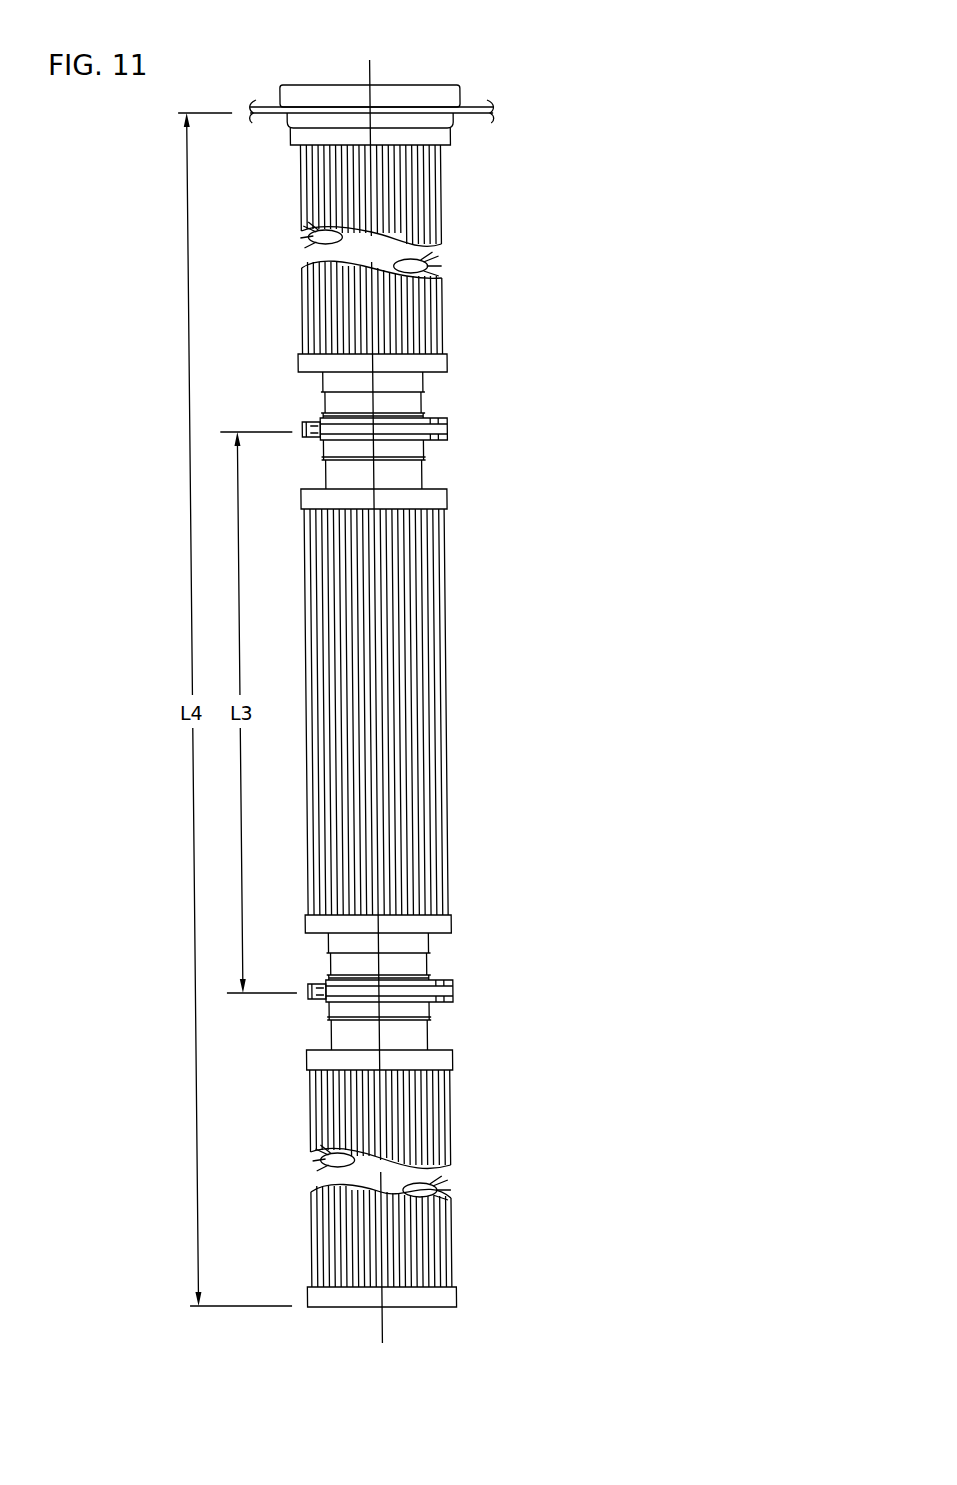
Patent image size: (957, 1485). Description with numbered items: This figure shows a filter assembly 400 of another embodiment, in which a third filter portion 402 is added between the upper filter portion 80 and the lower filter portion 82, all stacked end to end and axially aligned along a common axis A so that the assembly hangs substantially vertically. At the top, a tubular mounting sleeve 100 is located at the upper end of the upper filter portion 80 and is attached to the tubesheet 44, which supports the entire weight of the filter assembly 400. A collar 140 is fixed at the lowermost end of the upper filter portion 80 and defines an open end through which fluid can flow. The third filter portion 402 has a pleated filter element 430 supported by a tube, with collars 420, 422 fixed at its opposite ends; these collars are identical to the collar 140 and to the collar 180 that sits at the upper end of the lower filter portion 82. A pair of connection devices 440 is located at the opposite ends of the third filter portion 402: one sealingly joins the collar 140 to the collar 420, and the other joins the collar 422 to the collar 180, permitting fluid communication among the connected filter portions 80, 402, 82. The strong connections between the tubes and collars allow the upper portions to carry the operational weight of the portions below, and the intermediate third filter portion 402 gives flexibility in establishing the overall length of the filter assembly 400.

The central axis A is at (370, 60).
The tubular mounting sleeve 100 is at (437, 95).
The tubesheet 44 is at (472, 110).
The upper filter portion 80 is at (443, 218).
The collar 140 is at (424, 404).
The connection device 440 is at (453, 431).
The collar 420 is at (424, 460).
The filter assembly 400 is at (498, 596).
The third filter portion 402 is at (448, 755).
The pleated filter element 430 is at (415, 822).
The collar 422 is at (430, 962).
The collar 180 is at (430, 1020).
The lower filter portion 82 is at (452, 1102).